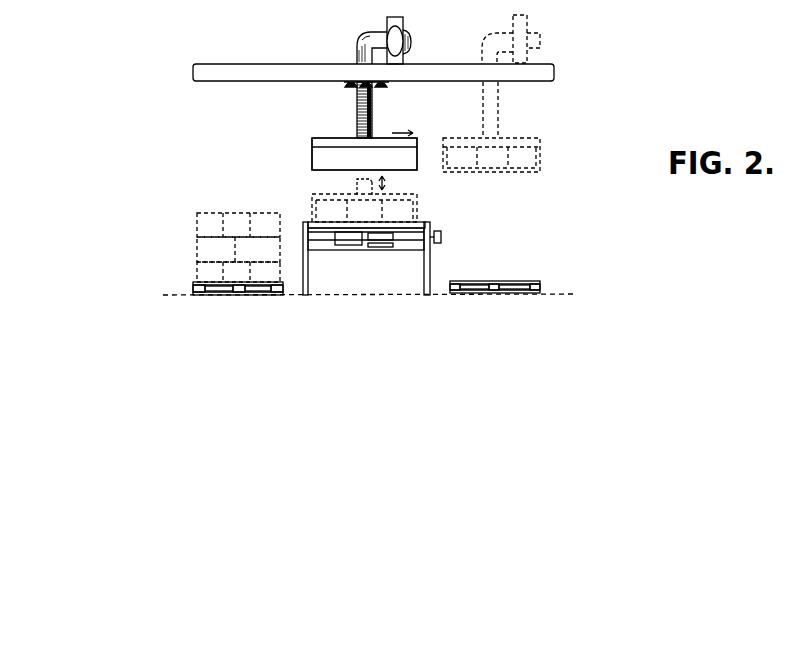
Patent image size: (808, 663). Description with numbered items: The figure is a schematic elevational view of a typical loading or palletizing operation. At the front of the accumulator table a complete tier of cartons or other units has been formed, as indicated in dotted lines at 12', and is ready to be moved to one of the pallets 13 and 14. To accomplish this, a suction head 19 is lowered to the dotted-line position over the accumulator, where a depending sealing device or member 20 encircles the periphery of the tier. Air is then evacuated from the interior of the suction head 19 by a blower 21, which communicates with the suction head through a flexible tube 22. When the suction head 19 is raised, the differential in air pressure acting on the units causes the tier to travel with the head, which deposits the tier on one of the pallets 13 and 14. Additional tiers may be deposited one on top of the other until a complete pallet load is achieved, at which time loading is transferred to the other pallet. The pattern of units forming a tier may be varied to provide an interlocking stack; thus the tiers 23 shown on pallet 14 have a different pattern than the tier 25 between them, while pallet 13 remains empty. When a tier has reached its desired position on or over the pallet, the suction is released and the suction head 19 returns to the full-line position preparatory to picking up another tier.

The complete tier at the front of the accumulator table 12' is at (373, 40).
The pallet 13 is at (534, 287).
The pallet 14 is at (193, 288).
The suction head 19 is at (315, 136).
The sealing device 20 is at (395, 160).
The blower 21 is at (406, 35).
The flexible tube 22 is at (357, 100).
The tiers 23 is at (197, 226).
The tier 25 is at (197, 250).